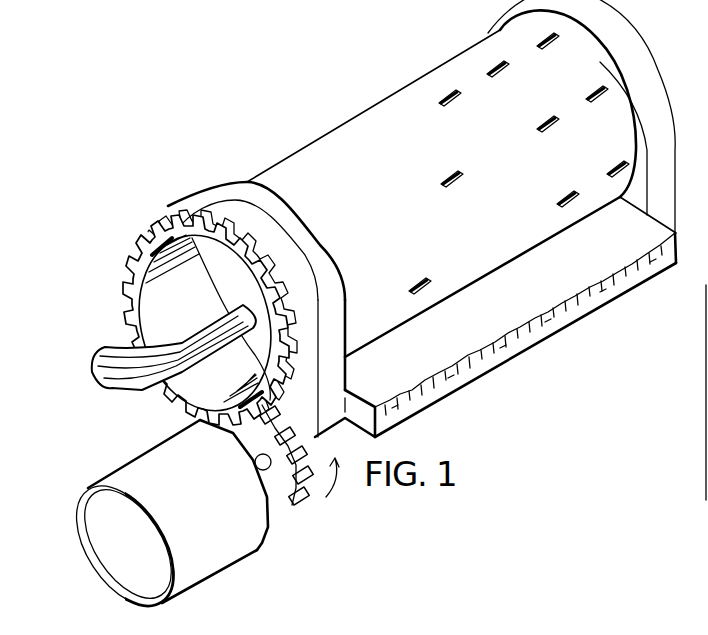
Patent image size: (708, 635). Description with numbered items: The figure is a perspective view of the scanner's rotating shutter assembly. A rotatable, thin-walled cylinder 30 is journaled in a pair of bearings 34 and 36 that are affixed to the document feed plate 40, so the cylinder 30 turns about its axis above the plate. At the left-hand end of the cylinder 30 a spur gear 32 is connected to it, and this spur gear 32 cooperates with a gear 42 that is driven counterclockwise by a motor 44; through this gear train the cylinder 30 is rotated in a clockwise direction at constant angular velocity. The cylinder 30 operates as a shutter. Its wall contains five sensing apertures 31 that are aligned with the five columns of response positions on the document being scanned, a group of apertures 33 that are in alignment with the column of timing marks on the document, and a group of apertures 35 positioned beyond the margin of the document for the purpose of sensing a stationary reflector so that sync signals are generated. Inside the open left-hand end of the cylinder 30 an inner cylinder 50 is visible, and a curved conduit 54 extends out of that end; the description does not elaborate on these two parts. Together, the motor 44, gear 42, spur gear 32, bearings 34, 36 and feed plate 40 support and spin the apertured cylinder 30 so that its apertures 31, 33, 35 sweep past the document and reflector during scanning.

The cylinder 30 is at (476, 255).
The sensing apertures 31 is at (436, 232).
The spur gear 32 is at (197, 310).
The apertures 33 is at (558, 161).
The bearing 34 is at (256, 220).
The apertures 35 is at (607, 131).
The bearing 36 is at (587, 116).
The document feed plate 40 is at (578, 272).
The gear 42 is at (304, 469).
The motor 44 is at (172, 521).
The inner cylinder 50 is at (208, 321).
The curved conduit 54 is at (171, 364).